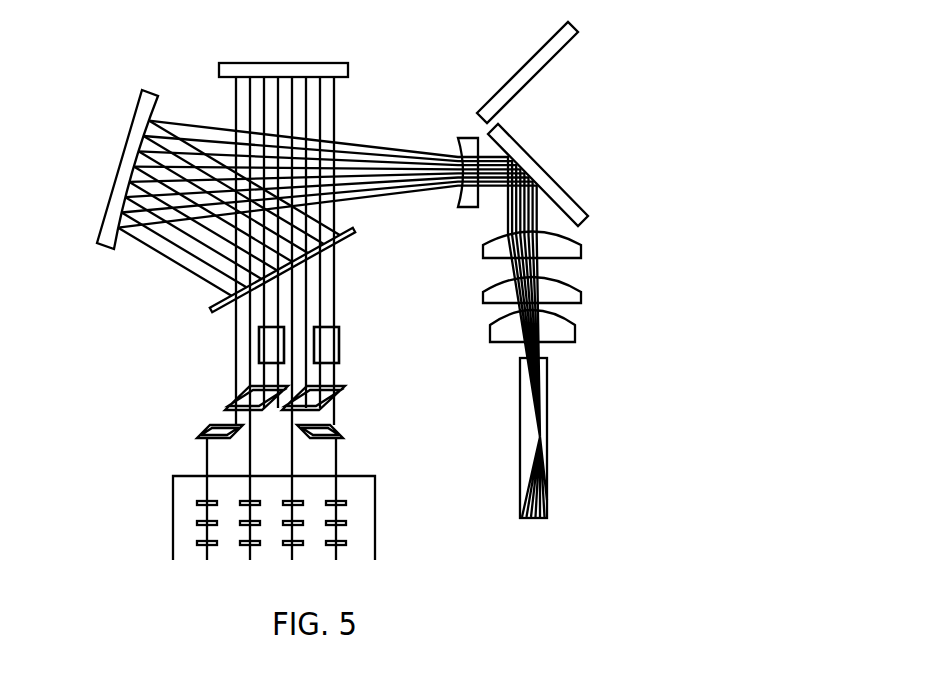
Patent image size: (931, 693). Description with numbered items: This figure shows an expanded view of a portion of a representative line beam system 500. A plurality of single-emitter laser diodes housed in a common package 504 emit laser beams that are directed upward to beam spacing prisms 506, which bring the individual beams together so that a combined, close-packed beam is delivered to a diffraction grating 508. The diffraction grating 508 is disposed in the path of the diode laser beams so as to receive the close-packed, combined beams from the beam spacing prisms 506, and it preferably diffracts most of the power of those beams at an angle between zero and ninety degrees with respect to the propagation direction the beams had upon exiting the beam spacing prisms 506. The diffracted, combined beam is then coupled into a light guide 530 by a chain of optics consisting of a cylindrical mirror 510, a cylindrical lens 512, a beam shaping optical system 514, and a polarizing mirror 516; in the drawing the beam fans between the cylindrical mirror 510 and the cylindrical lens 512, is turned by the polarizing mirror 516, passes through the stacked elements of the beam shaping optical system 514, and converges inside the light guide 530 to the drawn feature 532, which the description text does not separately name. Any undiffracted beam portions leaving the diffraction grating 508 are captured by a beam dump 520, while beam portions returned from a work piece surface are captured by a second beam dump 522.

The line beam system 500 is at (702, 164).
The common package 504 is at (393, 512).
The beam spacing prisms 506 is at (150, 332).
The diffraction grating 508 is at (344, 238).
The cylindrical mirror 510 is at (148, 90).
The cylindrical lens 512 is at (468, 140).
The beam shaping optical system 514 is at (627, 238).
The polarizing mirror 516 is at (557, 186).
The beam dump 520 is at (323, 63).
The beam dump 522 is at (502, 86).
The light guide 530 is at (540, 438).
The focal point 532 is at (537, 437).